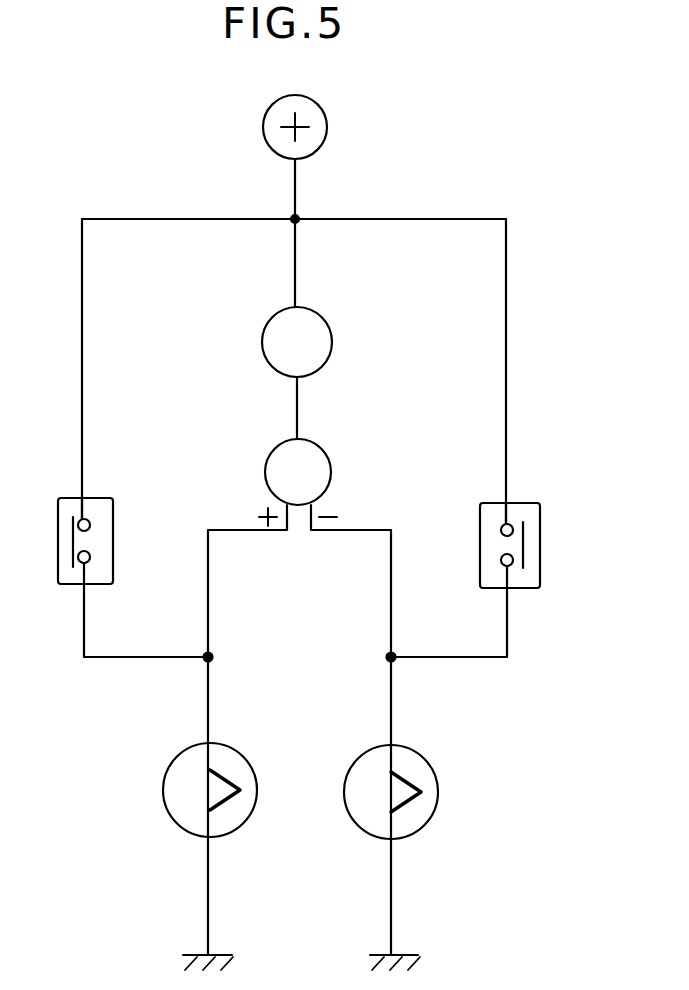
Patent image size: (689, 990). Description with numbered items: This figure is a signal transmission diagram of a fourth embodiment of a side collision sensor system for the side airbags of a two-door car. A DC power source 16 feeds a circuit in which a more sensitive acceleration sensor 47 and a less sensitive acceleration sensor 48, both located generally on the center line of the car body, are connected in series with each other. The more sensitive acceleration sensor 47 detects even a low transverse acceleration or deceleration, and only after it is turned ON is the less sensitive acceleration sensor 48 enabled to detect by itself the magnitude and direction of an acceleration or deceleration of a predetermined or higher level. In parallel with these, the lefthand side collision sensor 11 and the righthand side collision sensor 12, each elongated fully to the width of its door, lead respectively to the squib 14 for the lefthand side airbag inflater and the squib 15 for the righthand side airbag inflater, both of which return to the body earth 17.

The DC power source 16 is at (327, 121).
The more sensitive acceleration sensor 47 is at (332, 325).
The less sensitive acceleration sensor 48 is at (331, 451).
The lefthand side collision sensor 11 is at (103, 513).
The righthand side collision sensor 12 is at (530, 518).
The squib 14 is at (235, 762).
The squib 15 is at (421, 770).
The body earth 17 is at (222, 953).